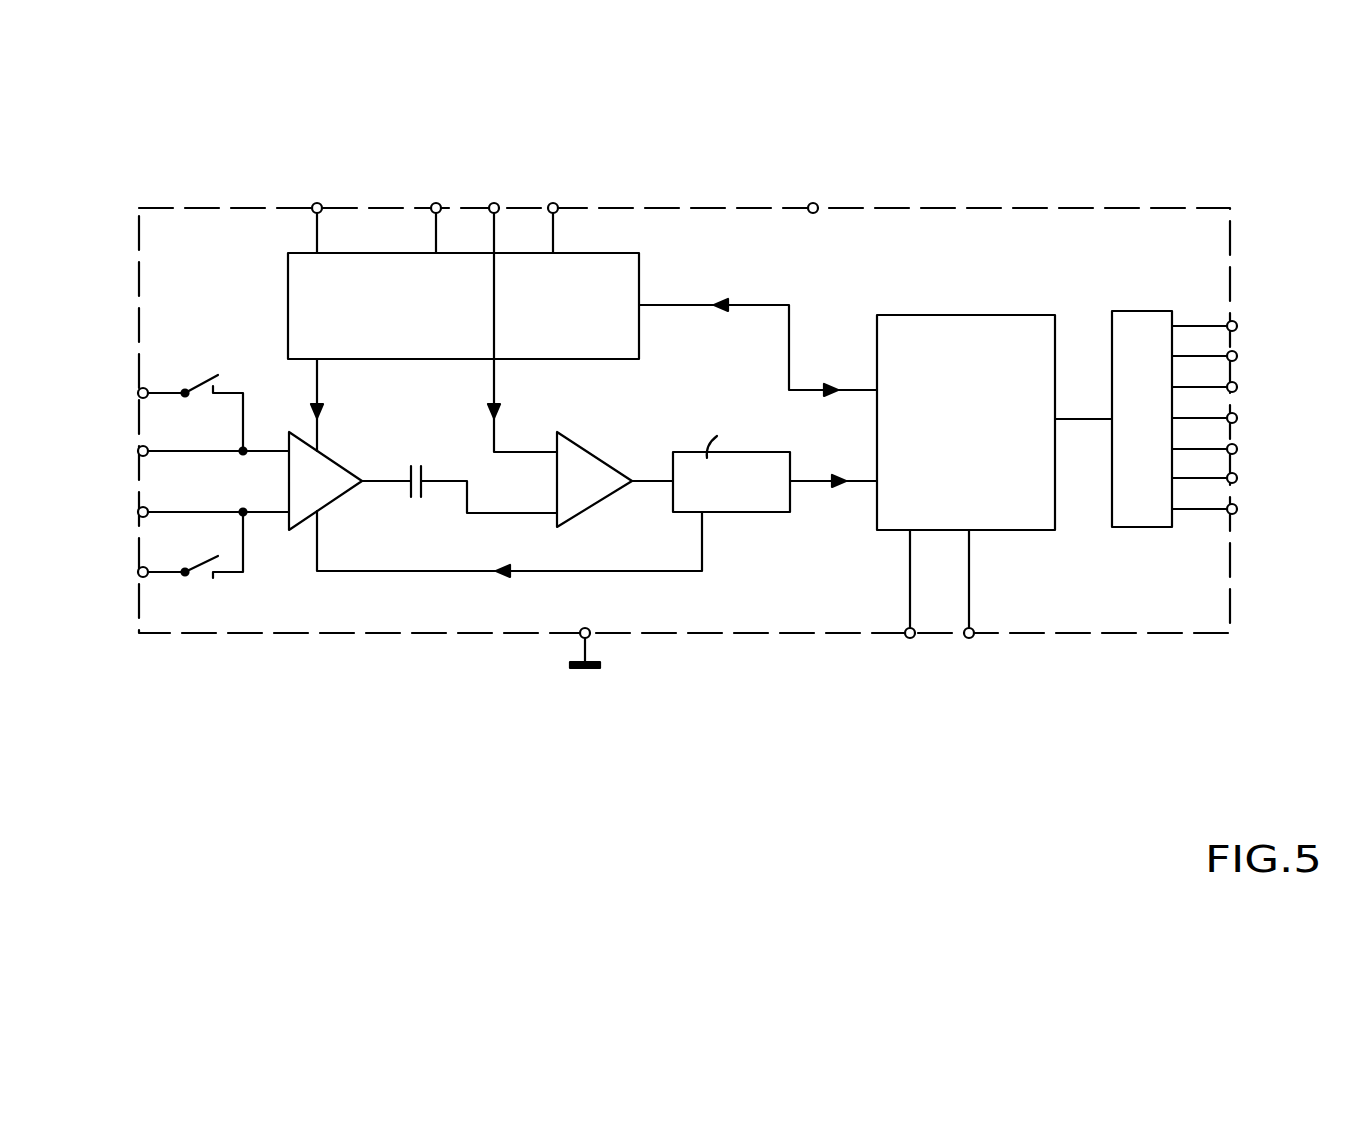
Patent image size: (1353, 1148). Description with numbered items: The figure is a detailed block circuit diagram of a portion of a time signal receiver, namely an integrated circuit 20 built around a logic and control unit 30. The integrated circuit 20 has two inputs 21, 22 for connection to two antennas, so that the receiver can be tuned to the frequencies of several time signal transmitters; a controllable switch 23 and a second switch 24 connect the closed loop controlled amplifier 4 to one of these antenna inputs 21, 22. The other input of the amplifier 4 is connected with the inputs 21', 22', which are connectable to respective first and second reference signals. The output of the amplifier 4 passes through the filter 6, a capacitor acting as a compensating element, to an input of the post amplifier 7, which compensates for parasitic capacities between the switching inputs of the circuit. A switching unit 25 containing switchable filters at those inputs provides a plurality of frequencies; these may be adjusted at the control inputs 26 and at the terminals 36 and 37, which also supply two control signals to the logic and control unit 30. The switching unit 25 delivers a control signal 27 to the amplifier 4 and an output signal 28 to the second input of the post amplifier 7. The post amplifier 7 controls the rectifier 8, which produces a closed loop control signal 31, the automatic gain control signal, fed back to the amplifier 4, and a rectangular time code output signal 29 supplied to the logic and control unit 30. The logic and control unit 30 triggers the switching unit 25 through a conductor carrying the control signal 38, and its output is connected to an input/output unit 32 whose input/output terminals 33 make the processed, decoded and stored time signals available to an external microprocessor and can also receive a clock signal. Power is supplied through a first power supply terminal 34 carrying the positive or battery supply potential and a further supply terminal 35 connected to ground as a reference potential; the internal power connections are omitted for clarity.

The integrated circuit 20 is at (1077, 208).
The input 21 is at (125, 395).
The input 21' is at (177, 455).
The input 22 is at (123, 592).
The input 22' is at (177, 519).
The controllable switch 23 is at (197, 378).
The second switch 24 is at (205, 578).
The switching unit 25 is at (646, 258).
The control inputs 26 is at (565, 163).
The control signal 27 is at (322, 405).
The output signal 28 is at (512, 452).
The signal 29 is at (842, 490).
The logic and control unit 30 is at (983, 315).
The closed loop control signal 31 is at (492, 580).
The input/output unit 32 is at (1143, 311).
The input/output terminals 33 is at (1257, 322).
The first power supply terminal 34 is at (815, 205).
The supply terminal 35 is at (575, 646).
The terminal 36 is at (913, 644).
The terminal 37 is at (962, 644).
The control signal 38 is at (828, 380).
The closed loop controlled amplifier 4 is at (338, 500).
The filter 6 is at (405, 498).
The post amplifier 7 is at (597, 502).
The rectifier 8 is at (752, 514).